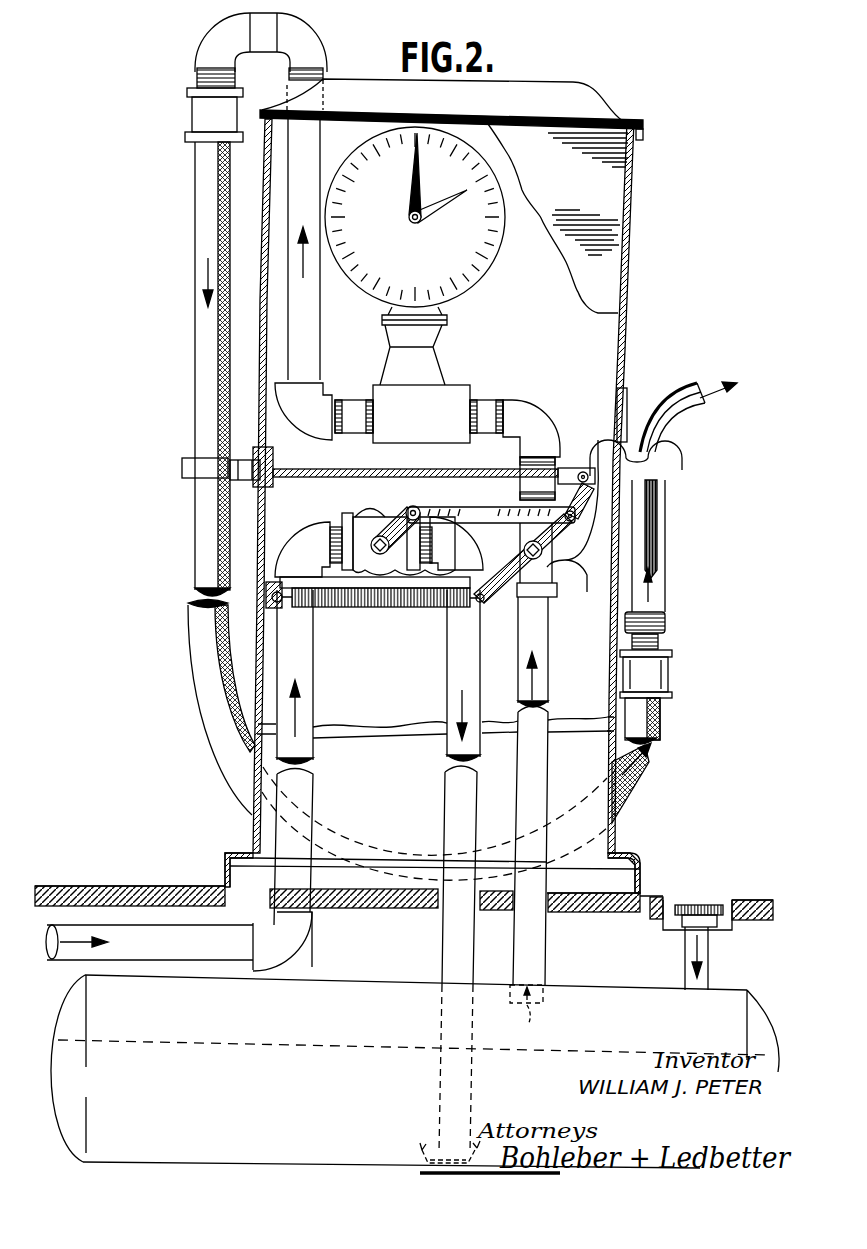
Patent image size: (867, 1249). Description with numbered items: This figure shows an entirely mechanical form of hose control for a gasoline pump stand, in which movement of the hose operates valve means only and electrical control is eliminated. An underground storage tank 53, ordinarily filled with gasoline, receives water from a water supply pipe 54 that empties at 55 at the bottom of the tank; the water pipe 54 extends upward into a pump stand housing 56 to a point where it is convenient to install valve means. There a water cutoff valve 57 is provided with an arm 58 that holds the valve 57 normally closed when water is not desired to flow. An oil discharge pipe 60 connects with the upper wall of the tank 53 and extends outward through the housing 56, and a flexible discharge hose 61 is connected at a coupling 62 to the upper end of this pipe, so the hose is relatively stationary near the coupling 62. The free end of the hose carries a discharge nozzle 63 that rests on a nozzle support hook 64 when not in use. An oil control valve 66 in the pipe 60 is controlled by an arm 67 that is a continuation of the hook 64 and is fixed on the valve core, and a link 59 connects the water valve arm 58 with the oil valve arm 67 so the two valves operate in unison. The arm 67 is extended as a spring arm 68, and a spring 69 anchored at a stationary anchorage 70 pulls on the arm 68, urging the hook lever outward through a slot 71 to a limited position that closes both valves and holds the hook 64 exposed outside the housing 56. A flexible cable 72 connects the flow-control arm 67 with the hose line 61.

The underground storage tank 53 is at (370, 997).
The water supply pipe 54 is at (305, 666).
The water pipe outlet 55 is at (445, 1142).
The pump stand housing 56 is at (620, 263).
The water cutoff valve 57 is at (368, 516).
The arm of water valve 58 is at (412, 507).
The link 59 is at (472, 508).
The oil discharge pipe 60 is at (313, 330).
The flexible discharge hose 61 is at (200, 238).
The coupling 62 is at (207, 140).
The discharge nozzle 63 is at (697, 412).
The nozzle support hook 64 is at (685, 460).
The oil control valve 66 is at (574, 568).
The oil valve arm 67 is at (578, 520).
The spring arm 68 is at (503, 600).
The spring 69 is at (372, 612).
The stationary anchorage 70 is at (272, 613).
The slot 71 is at (630, 405).
The flexible cable 72 is at (356, 457).